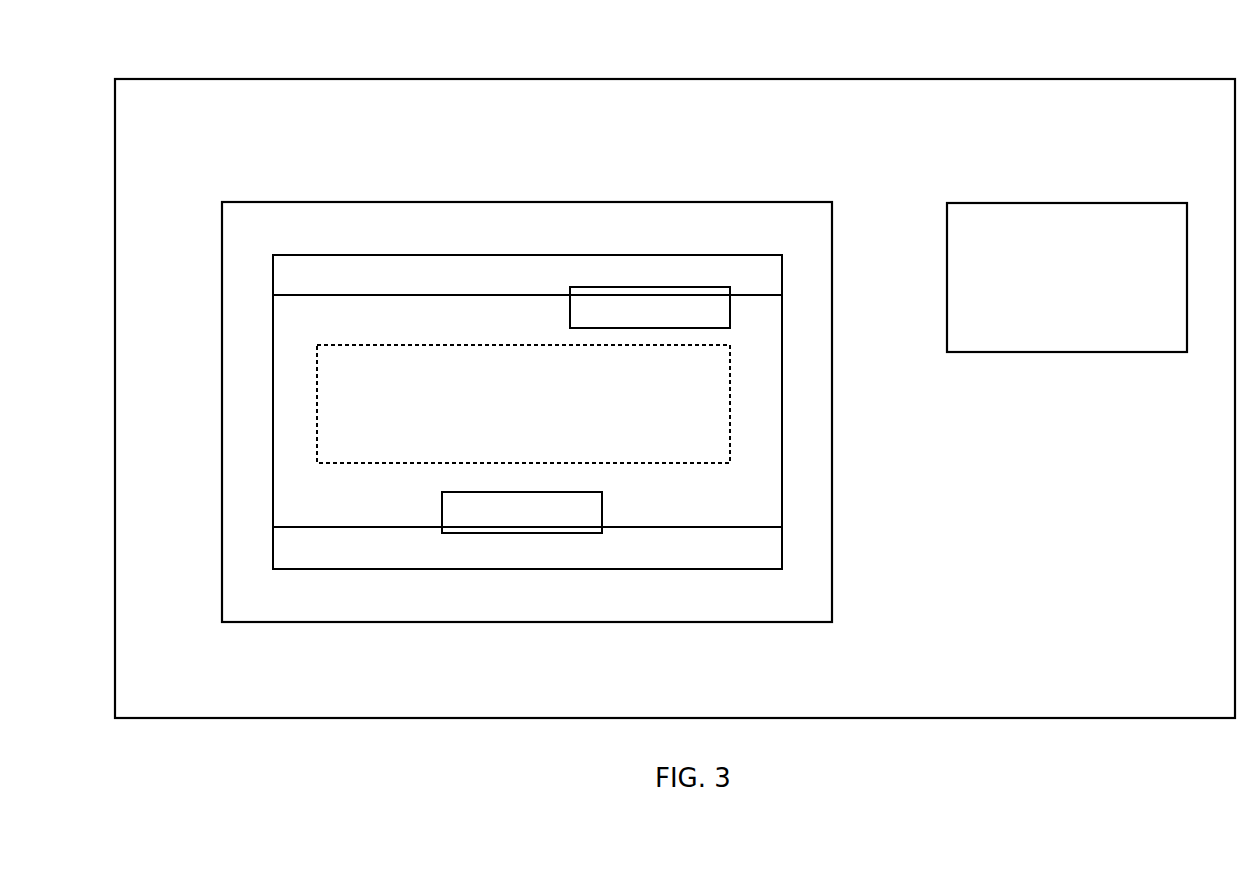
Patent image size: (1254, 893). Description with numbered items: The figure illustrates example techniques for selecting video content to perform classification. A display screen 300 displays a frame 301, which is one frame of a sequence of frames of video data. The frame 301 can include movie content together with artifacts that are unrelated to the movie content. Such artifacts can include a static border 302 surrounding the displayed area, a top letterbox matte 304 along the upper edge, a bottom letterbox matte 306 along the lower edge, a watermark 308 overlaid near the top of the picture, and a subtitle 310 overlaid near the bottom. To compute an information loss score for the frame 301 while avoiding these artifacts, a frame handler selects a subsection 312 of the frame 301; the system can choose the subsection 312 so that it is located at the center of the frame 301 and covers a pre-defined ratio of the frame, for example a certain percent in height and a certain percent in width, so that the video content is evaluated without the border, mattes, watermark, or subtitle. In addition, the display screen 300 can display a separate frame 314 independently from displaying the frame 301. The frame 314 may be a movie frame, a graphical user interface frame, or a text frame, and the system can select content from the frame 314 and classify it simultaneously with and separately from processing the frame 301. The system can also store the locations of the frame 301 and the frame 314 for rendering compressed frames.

The display screen 300 is at (308, 79).
The frame 301 is at (237, 202).
The static border 302 is at (628, 228).
The top letterbox matte 304 is at (747, 273).
The bottom letterbox matte 306 is at (765, 551).
The watermark 308 is at (730, 307).
The subtitle 310 is at (580, 535).
The subsection 312 is at (317, 394).
The frame 314 is at (1048, 353).